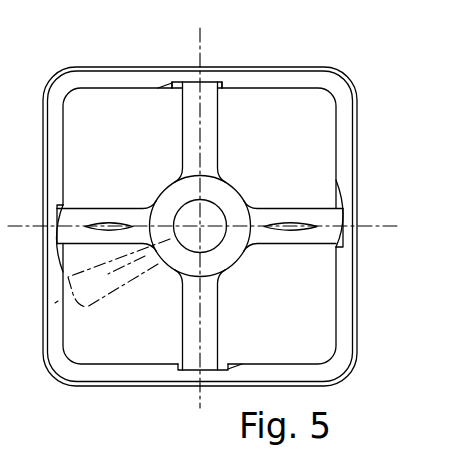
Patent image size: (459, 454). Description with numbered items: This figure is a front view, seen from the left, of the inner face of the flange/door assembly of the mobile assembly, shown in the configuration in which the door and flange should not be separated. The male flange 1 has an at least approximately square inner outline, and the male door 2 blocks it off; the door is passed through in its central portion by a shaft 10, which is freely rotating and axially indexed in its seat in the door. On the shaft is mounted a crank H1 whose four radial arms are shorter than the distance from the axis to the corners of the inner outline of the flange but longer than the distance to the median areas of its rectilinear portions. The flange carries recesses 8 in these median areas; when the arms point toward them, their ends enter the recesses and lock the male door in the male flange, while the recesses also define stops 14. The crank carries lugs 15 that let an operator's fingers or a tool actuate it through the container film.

The male flange 1 is at (296, 77).
The male door 2 is at (315, 107).
The recesses 8 is at (174, 87).
The stops 14 is at (224, 87).
The shaft 10 is at (212, 217).
The lugs 15 is at (108, 222).
The crank H1 is at (193, 123).